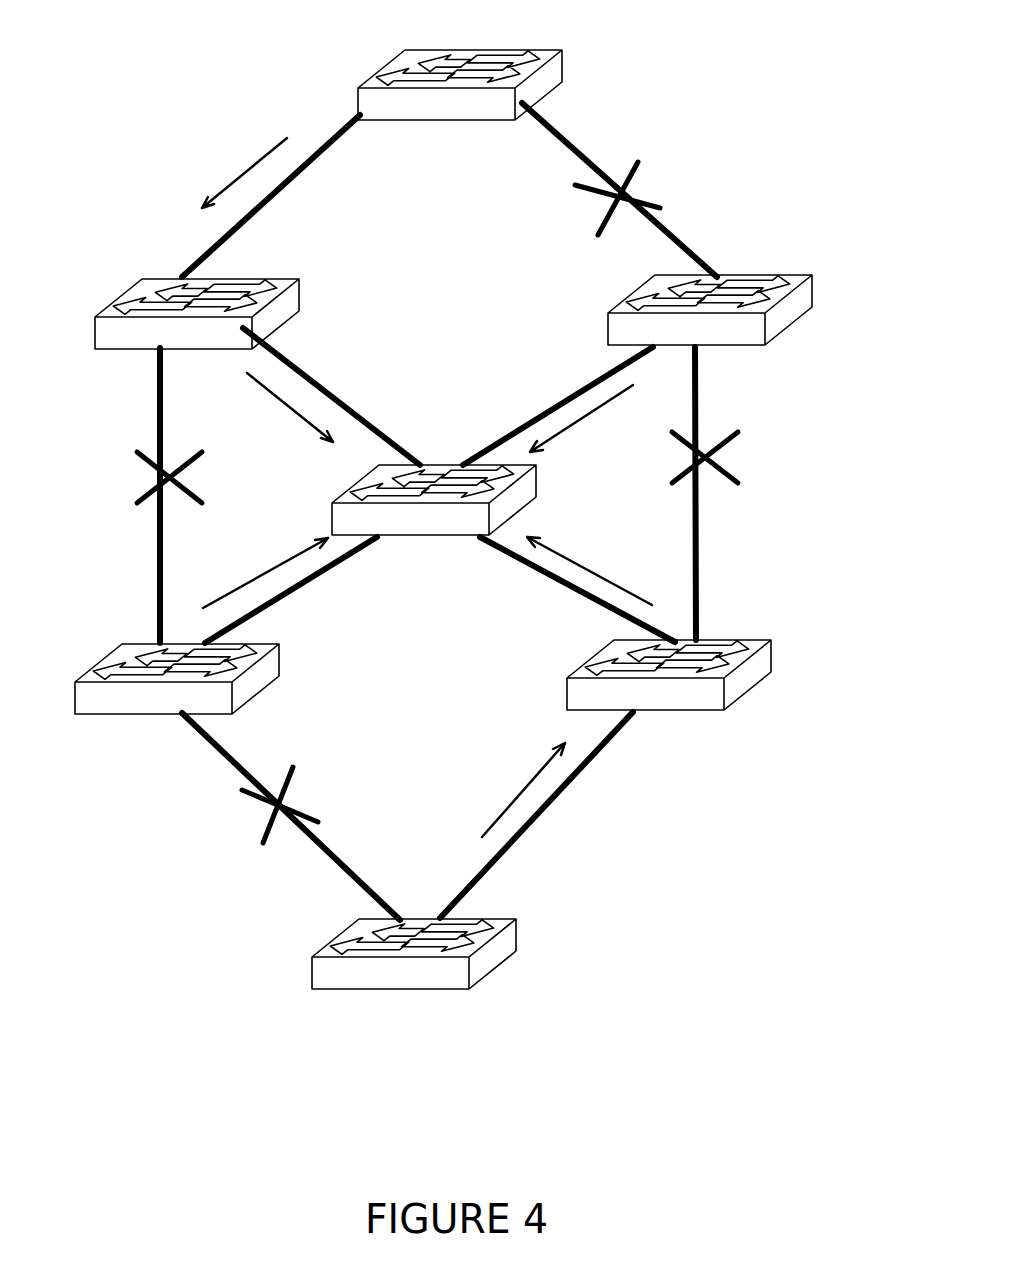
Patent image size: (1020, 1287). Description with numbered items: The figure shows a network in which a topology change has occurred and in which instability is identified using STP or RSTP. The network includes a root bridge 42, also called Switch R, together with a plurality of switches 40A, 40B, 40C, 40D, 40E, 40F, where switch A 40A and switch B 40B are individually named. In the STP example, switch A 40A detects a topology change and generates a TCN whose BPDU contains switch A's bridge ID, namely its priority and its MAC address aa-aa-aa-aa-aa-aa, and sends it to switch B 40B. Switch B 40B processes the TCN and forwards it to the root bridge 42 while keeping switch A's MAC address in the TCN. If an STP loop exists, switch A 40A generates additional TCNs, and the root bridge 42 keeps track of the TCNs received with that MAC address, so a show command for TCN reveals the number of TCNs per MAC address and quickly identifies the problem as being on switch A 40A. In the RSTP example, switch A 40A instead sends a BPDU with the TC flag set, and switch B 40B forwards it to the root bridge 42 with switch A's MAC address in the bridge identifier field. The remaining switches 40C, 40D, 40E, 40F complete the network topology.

The switch A 40A is at (340, 940).
The switch B 40B is at (728, 638).
The switch 40C is at (788, 282).
The switch 40D is at (437, 50).
The switch 40E is at (138, 290).
The switch 40F is at (110, 650).
The root bridge 42 is at (537, 467).